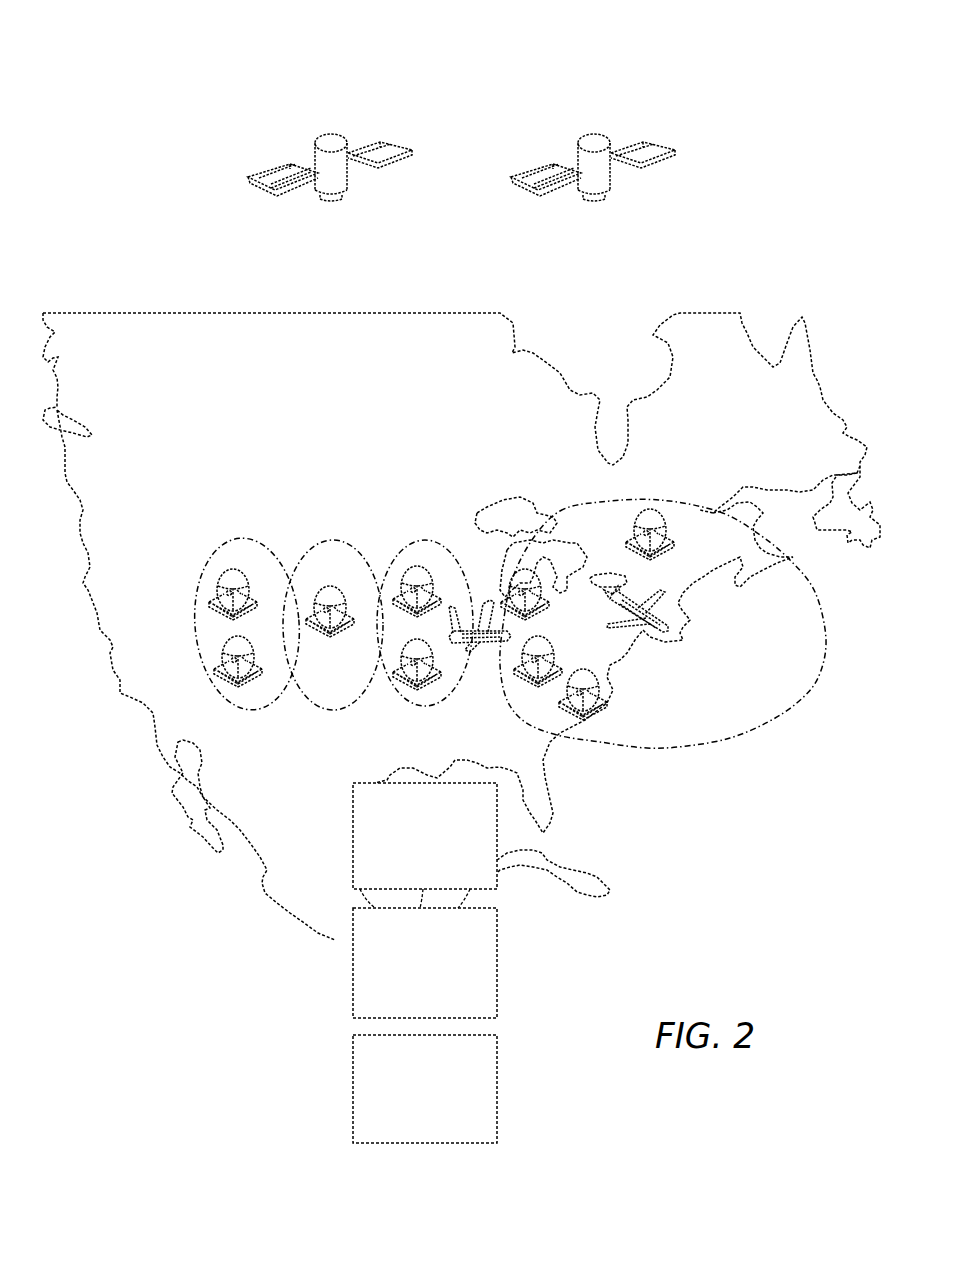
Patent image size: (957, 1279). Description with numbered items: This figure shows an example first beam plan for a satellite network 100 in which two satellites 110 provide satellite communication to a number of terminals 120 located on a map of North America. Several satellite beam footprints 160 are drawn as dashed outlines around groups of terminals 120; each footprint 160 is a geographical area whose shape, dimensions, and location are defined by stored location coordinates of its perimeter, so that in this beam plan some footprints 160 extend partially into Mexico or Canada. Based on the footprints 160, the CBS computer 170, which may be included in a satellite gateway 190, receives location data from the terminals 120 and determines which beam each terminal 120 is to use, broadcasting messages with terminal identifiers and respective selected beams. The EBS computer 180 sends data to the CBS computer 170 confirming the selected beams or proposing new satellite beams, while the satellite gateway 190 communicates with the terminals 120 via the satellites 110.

The satellite network 100 is at (803, 18).
The satellite 110 is at (325, 133).
The terminal 120 is at (255, 640).
The satellite beam footprint 160 is at (400, 707).
The CBS computer 170 is at (447, 850).
The EBS computer 180 is at (447, 975).
The satellite gateway 190 is at (447, 1102).